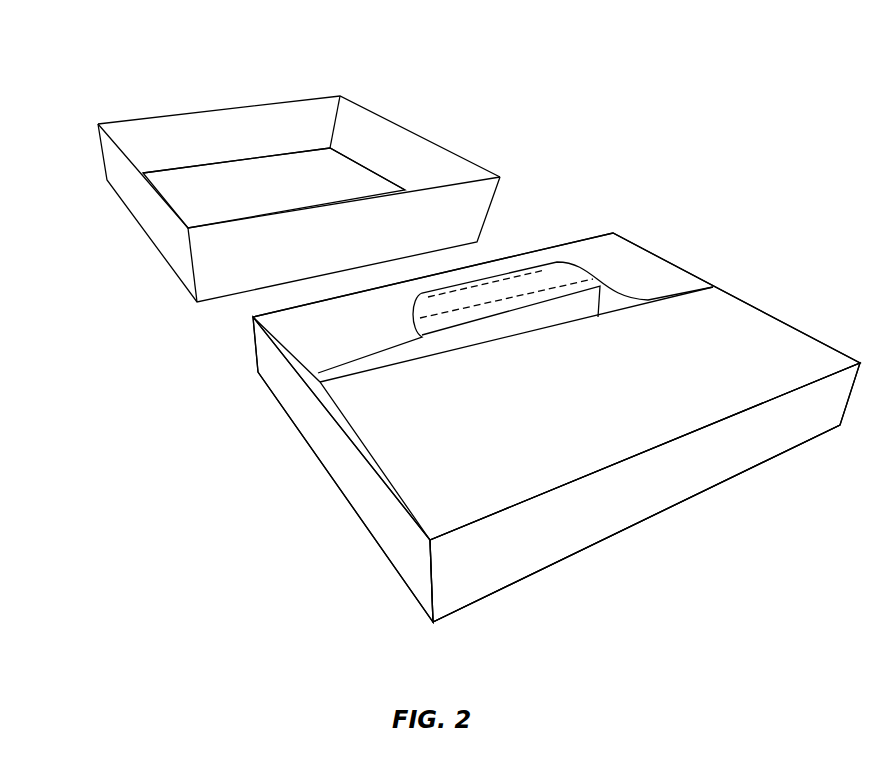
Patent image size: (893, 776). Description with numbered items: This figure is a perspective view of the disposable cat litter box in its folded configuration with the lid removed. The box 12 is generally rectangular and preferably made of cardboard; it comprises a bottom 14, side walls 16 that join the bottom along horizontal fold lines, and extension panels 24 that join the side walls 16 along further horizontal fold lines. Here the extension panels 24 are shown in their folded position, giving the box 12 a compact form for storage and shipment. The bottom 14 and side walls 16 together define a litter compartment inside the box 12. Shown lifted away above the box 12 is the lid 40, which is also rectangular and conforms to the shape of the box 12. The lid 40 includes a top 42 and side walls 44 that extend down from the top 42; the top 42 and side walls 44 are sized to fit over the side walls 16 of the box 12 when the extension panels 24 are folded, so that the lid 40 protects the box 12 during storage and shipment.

The box 12 is at (680, 512).
The bottom 14 is at (526, 579).
The side walls 16 is at (358, 477).
The extension panels 24 is at (628, 262).
The lid 40 is at (78, 127).
The top 42 is at (290, 199).
The side walls 44 is at (233, 130).